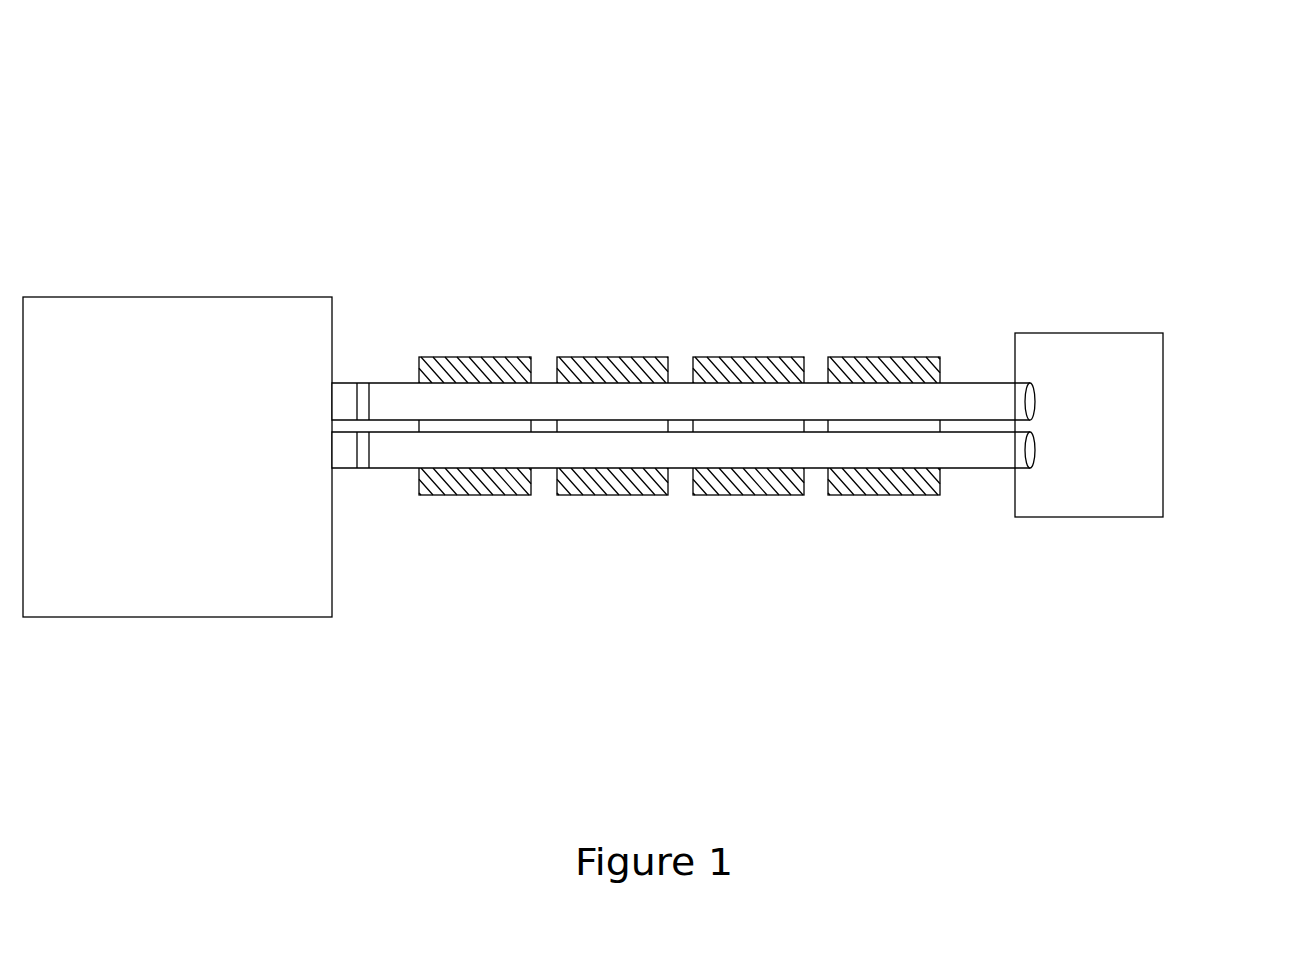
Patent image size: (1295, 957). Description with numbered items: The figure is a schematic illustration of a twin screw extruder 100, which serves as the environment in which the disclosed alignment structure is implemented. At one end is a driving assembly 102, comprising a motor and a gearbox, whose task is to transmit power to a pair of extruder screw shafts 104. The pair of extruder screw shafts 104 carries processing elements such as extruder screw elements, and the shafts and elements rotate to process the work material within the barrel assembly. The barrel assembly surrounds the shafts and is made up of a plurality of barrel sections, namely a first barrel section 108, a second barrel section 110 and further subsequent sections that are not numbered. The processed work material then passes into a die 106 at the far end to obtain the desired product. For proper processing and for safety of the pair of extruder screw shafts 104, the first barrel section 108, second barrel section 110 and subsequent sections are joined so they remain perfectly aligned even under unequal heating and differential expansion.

The twin screw extruder 100 is at (1167, 95).
The driving assembly 102 is at (177, 297).
The pair of extruder screw shafts 104 is at (977, 382).
The die 106 is at (1062, 333).
The first barrel section 108 is at (443, 357).
The second barrel section 110 is at (592, 357).